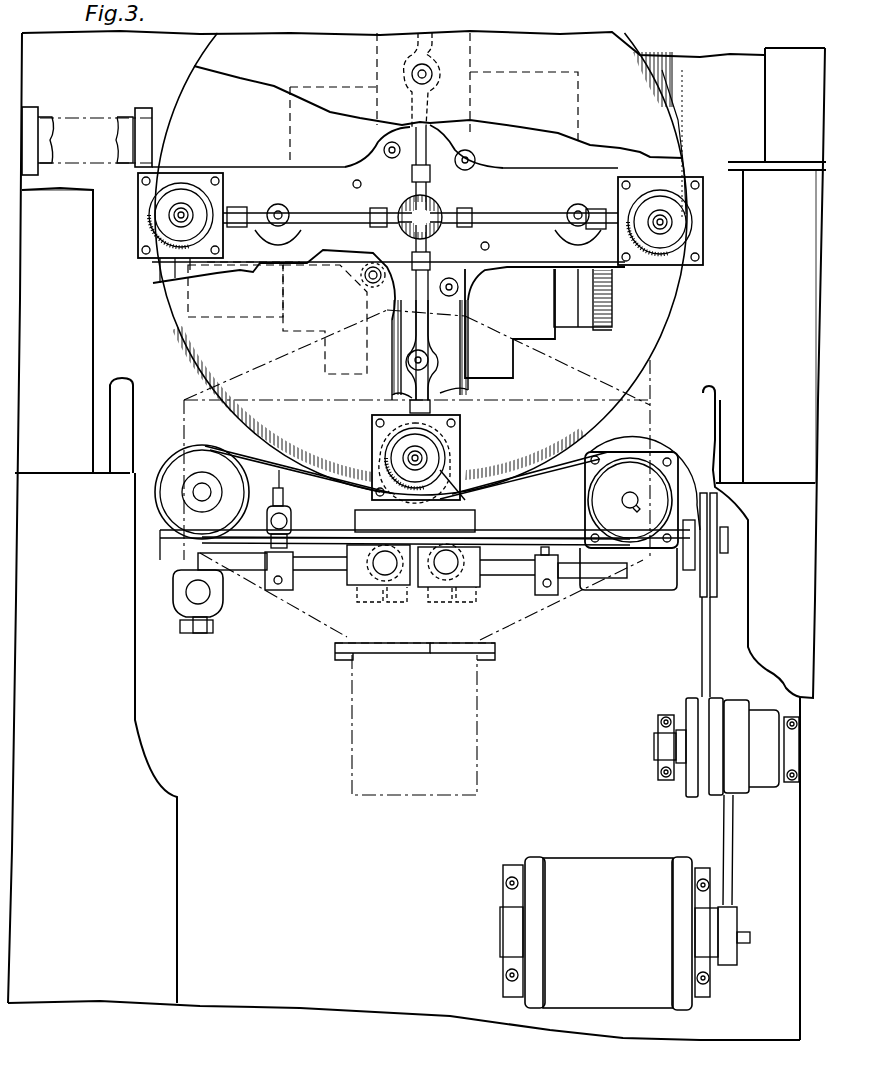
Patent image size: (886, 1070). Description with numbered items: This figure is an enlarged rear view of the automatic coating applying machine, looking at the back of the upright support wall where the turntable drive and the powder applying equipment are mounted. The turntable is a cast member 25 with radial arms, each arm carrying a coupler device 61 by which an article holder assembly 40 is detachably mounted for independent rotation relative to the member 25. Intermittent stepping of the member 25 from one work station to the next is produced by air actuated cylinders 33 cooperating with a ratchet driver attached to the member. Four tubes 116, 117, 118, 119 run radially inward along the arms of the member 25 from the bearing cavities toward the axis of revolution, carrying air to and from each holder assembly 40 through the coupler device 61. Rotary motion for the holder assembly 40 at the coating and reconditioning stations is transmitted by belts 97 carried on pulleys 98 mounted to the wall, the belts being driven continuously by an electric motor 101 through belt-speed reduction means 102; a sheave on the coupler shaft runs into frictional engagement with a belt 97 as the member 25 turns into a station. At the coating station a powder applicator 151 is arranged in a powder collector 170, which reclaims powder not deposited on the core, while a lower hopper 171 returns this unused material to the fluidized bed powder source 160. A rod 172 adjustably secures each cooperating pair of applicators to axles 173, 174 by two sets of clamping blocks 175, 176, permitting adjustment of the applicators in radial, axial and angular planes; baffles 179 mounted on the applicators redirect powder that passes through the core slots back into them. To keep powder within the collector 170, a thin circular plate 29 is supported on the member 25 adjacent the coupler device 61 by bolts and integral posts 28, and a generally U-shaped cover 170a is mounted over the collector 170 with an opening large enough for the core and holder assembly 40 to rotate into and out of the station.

The cast member 25 is at (246, 166).
The integral posts 28 is at (470, 165).
The thin circular plate 29 is at (668, 138).
The air actuated cylinders 33 is at (125, 128).
The article holder assembly 40 is at (168, 240).
The coupler device 61 is at (150, 194).
The belts 97 is at (545, 472).
The pulleys 98 is at (176, 506).
The electric motor 101 is at (625, 933).
The belt-speed reduction means 102 is at (686, 700).
The tube 116 is at (327, 212).
The tube 117 is at (410, 332).
The tube 118 is at (522, 214).
The tube 119 is at (424, 130).
The powder applicator 151 is at (293, 519).
The fluidized bed powder source 160 is at (419, 326).
The powder collector 170 is at (508, 630).
The U-shaped cover 170a is at (609, 378).
The lower hopper 171 is at (478, 712).
The rod 172 is at (256, 571).
The axle 173 is at (386, 567).
The axle 174 is at (448, 566).
The clamping blocks 175 is at (285, 578).
The clamping blocks 176 is at (353, 580).
The baffles 179 is at (297, 494).